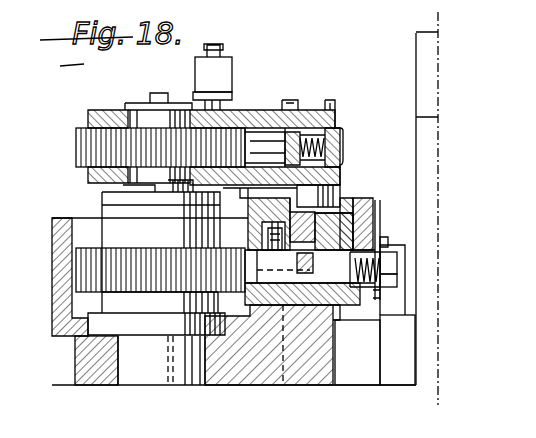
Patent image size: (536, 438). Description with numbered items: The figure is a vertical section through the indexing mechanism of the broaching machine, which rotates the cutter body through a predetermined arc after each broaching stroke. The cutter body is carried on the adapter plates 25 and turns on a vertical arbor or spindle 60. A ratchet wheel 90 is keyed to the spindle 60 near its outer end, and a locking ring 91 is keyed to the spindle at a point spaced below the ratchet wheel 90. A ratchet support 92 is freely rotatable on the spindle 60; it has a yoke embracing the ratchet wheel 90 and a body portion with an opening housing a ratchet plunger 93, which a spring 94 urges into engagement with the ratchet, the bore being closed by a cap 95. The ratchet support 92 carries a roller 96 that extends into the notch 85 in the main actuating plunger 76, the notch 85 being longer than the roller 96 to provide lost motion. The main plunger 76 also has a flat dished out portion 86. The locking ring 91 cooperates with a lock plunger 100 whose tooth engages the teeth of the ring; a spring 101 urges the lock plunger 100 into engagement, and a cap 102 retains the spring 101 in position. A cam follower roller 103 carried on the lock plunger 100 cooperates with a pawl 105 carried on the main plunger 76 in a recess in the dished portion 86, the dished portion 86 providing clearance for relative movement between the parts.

The adapter plates 25 is at (430, 336).
The arbor or spindle 60 is at (143, 372).
The main actuating plunger 76 is at (362, 228).
The notch 85 is at (297, 189).
The flat dished out portion 86 is at (368, 246).
The ratchet wheel 90 is at (82, 147).
The locking ring 91 is at (93, 276).
The ratchet support 92 is at (262, 148).
The ratchet plunger 93 is at (288, 150).
The spring 94 is at (312, 133).
The cap 95 is at (342, 150).
The roller 96 is at (341, 200).
The lock plunger 100 is at (273, 282).
The spring 101 is at (384, 265).
The cap 102 is at (387, 283).
The cam follower roller 103 is at (348, 269).
The pawl 105 is at (352, 208).